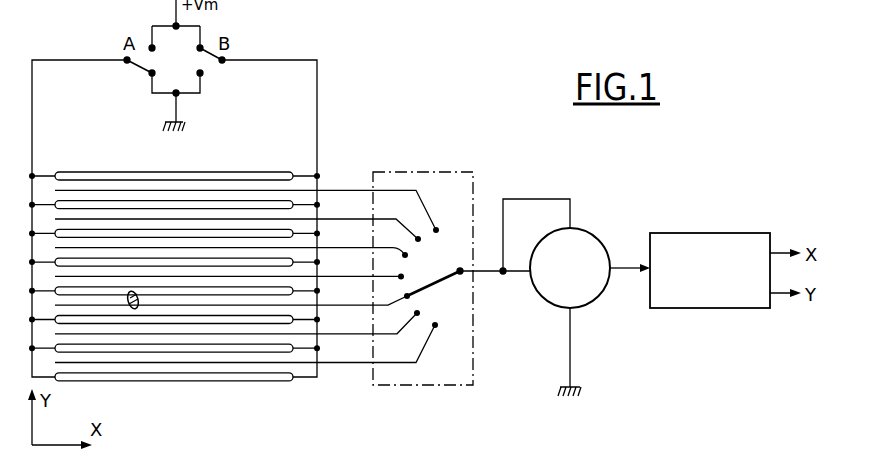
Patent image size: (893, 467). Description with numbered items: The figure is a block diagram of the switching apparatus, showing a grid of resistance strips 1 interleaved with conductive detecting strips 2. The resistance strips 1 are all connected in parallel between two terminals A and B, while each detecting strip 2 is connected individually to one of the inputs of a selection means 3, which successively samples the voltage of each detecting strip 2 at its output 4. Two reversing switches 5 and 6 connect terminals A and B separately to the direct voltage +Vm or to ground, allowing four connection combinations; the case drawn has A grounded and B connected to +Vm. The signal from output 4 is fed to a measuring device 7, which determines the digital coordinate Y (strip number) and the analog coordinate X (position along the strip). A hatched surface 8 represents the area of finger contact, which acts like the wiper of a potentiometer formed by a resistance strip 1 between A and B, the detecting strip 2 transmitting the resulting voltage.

The resistance strips 1 is at (252, 204).
The conductive detecting strips 2 is at (93, 214).
The selection means 3 is at (436, 172).
The output 4 is at (490, 268).
The reversing switch 5 is at (130, 78).
The reversing switch 6 is at (215, 74).
The measuring device 7 is at (600, 236).
The hatched surface 8 is at (135, 309).